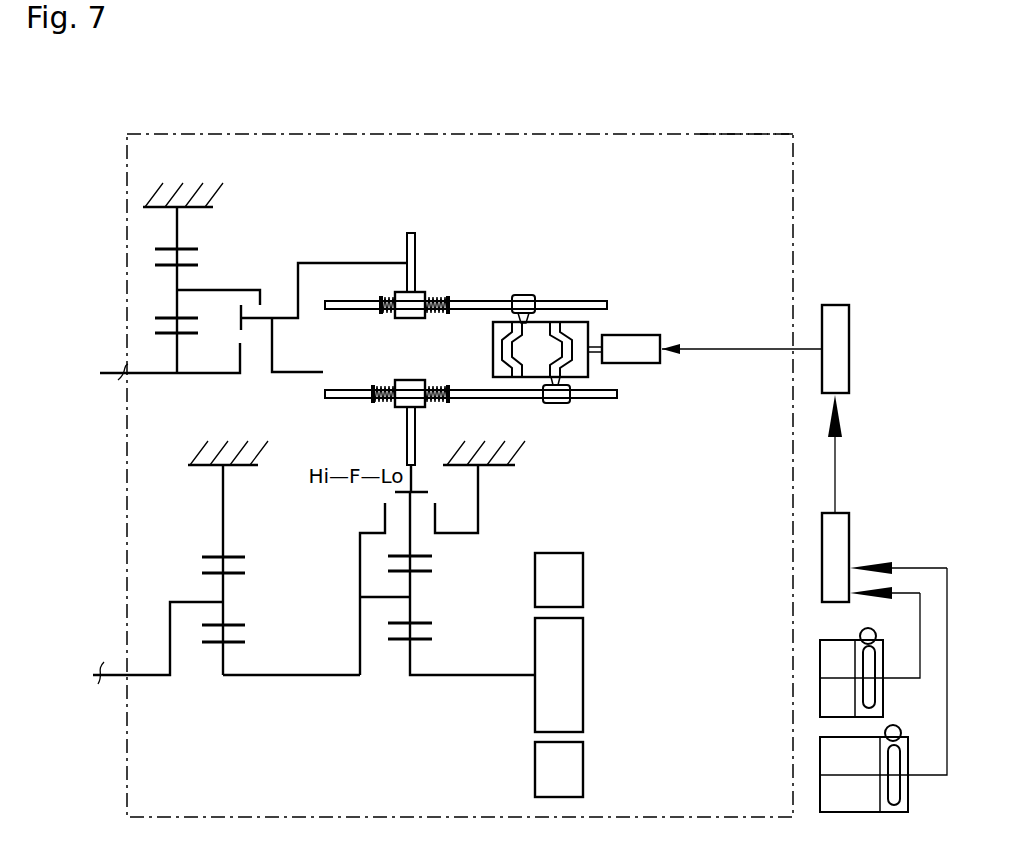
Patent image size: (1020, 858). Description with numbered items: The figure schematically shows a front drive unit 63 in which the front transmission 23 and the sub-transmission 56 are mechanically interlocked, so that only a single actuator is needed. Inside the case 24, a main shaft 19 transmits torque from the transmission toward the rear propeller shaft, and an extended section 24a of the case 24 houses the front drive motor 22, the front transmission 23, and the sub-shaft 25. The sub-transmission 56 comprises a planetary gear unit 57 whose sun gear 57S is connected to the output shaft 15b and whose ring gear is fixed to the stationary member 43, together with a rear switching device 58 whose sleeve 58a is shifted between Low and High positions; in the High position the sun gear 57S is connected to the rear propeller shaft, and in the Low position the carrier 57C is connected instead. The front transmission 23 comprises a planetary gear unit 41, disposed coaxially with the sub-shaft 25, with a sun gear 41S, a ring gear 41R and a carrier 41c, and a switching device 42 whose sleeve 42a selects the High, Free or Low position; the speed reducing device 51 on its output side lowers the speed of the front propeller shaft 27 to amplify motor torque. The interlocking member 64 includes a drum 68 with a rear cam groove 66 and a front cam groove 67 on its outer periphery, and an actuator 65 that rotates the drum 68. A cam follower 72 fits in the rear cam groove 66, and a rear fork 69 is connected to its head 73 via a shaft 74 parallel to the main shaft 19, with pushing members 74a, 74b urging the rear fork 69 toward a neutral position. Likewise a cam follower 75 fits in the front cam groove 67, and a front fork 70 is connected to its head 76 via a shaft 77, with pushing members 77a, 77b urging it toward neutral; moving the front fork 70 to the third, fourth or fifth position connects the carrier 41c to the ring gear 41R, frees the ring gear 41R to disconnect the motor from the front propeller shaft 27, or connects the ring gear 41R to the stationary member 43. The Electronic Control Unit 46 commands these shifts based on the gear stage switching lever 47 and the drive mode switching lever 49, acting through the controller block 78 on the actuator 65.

The front drive unit 63 is at (745, 133).
The case 24 is at (793, 168).
The interlocking member 64 is at (519, 336).
The stationary member 43 is at (203, 204).
The sub-transmission 56 is at (232, 308).
The planetary gear unit 57 is at (147, 290).
The carrier 57C is at (208, 290).
The sun gear 57S is at (160, 322).
The rear switching device 58 is at (253, 327).
The sleeve 58a is at (170, 356).
The output shaft 15b is at (112, 380).
The main shaft 19 is at (316, 376).
The rear fork 69 is at (411, 245).
The pushing member 74a is at (383, 300).
The pushing member 74b is at (437, 293).
The cam follower 72 is at (508, 318).
The head 73 is at (525, 299).
The shaft 74 is at (479, 273).
The drum 68 is at (561, 354).
The front cam groove 67 is at (567, 357).
The actuator 65 is at (645, 355).
The controller 78 is at (840, 340).
The rear cam groove 66 is at (510, 363).
The cam follower 75 is at (555, 380).
The head 76 is at (555, 403).
The shaft 77 is at (481, 439).
The pushing member 77a is at (383, 400).
The pushing member 77b is at (436, 408).
The front fork 70 is at (407, 447).
The sleeve 42a is at (393, 490).
The switching device 42 is at (377, 513).
The ring gear 41R is at (425, 550).
The carrier 41c is at (360, 620).
The sun gear 41S is at (420, 640).
The front drive motor 22 is at (585, 643).
The Electronic Control Unit 46 is at (852, 535).
The gear stage switching lever 47 is at (820, 665).
The drive mode switching lever 49 is at (820, 752).
The extended section 24a is at (127, 548).
The front propeller shaft 27 is at (93, 680).
The sub-shaft 25 is at (150, 680).
The speed reducing device 51 is at (253, 697).
The front transmission 23 is at (408, 688).
The planetary gear unit 41 is at (396, 639).